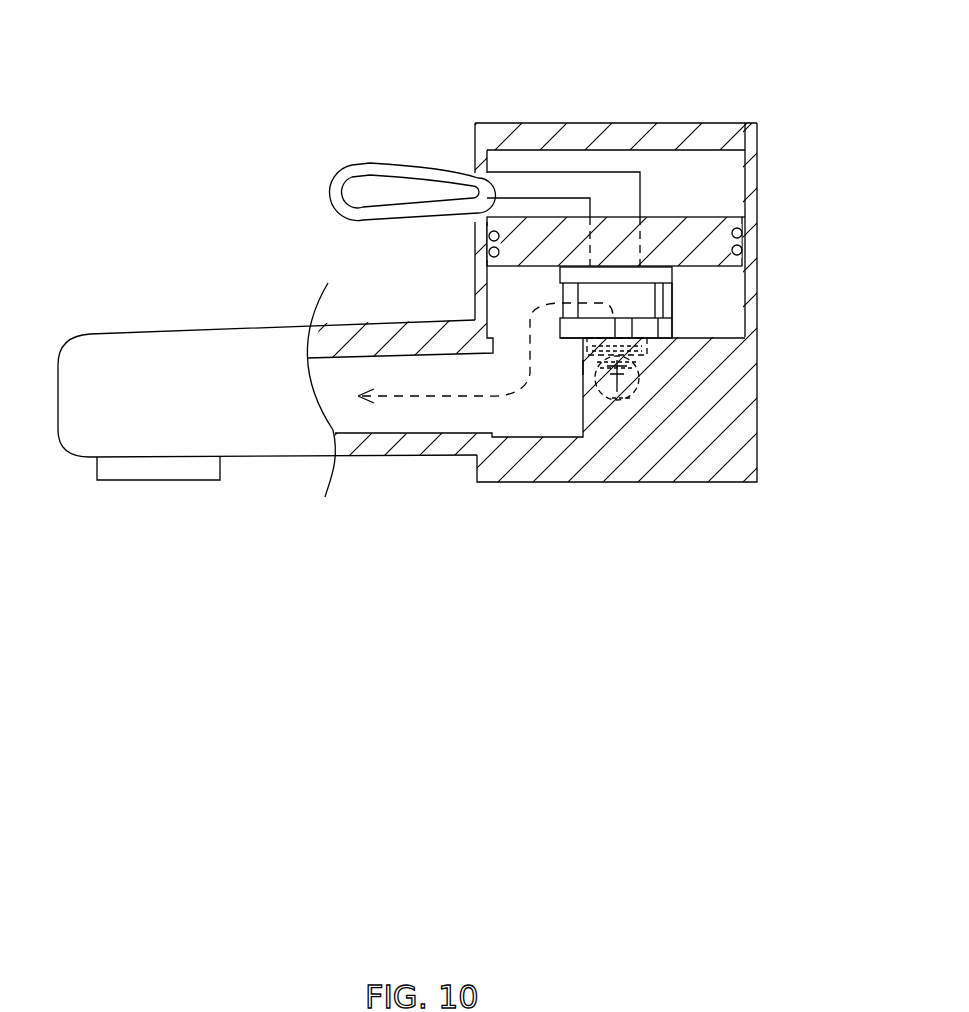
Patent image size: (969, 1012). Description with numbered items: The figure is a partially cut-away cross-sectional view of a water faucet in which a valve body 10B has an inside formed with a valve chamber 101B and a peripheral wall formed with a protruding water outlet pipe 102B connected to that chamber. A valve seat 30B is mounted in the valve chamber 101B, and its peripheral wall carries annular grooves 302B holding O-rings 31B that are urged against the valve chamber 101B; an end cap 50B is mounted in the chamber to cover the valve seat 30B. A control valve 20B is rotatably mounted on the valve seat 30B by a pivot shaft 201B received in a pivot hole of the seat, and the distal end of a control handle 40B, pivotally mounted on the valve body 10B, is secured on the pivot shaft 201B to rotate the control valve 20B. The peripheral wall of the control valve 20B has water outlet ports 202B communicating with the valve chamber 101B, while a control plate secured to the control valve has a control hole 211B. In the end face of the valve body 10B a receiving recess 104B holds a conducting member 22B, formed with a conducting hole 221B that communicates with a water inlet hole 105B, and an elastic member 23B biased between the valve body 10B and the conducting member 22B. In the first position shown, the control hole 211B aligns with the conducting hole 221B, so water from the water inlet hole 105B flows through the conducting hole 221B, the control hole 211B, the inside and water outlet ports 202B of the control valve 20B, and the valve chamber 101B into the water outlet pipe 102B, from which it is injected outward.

The valve body 10B is at (550, 490).
The valve chamber 101B is at (737, 320).
The water outlet pipe 102B is at (137, 343).
The receiving recess 104B is at (653, 373).
The water inlet hole 105B is at (627, 400).
The control valve 20B is at (545, 283).
The pivot shaft 201B is at (620, 200).
The water outlet port 202B is at (673, 305).
The control hole 211B is at (583, 337).
The conducting hole 221B is at (578, 367).
The conducting member 22B is at (640, 347).
The elastic member 23B is at (735, 461).
The valve seat 30B is at (560, 232).
The annular groove 302B is at (487, 230).
The O-ring 31B is at (484, 234).
The control handle 40B is at (345, 163).
The end cap 50B is at (515, 125).